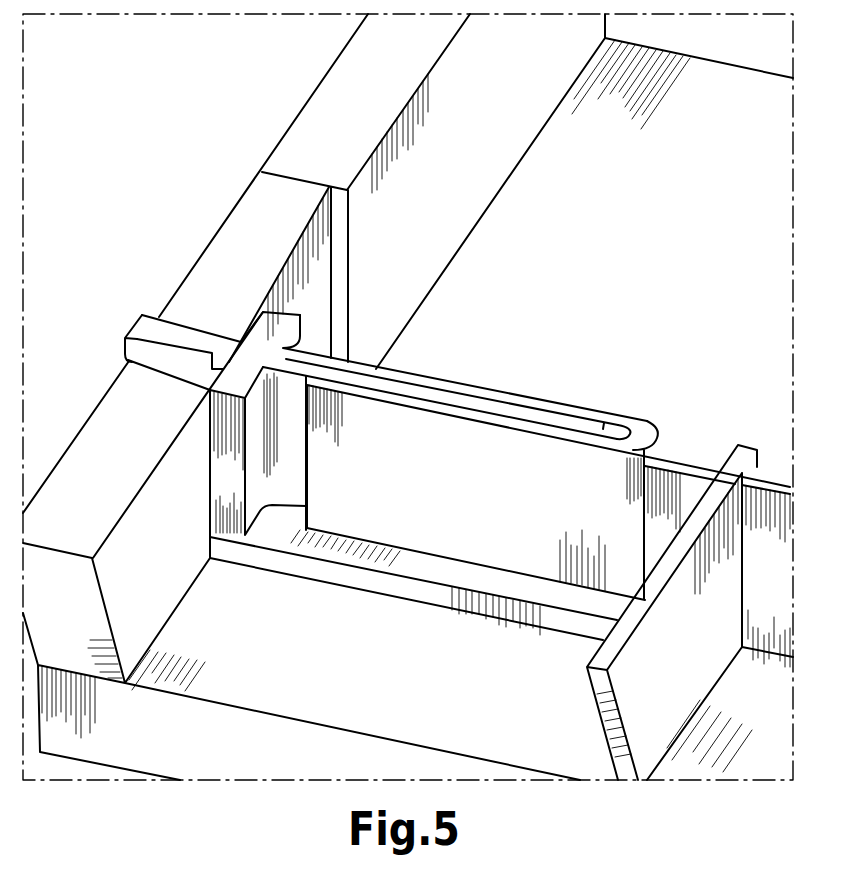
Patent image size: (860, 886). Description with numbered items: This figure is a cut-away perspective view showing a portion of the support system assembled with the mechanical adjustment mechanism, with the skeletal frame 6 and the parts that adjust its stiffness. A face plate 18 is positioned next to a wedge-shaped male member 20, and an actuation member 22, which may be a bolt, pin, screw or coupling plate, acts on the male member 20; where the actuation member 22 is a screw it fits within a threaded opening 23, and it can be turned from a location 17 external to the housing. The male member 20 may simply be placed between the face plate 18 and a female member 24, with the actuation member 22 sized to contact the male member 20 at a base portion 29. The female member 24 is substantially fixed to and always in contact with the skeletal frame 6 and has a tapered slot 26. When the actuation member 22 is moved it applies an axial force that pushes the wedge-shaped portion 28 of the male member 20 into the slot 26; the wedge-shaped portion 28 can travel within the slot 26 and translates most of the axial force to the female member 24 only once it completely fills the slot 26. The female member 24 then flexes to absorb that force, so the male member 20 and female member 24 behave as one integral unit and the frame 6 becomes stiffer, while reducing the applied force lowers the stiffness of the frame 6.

The skeletal frame 6 is at (678, 651).
The location external to the housing 17 is at (152, 226).
The face plate 18 is at (223, 269).
The male member 20 is at (310, 343).
The actuation member 22 is at (138, 328).
The threaded opening 23 is at (163, 355).
The female member 24 is at (473, 543).
The tapered slot 26 is at (508, 403).
The wedge-shaped portion 28 is at (273, 449).
The base portion 29 is at (213, 476).